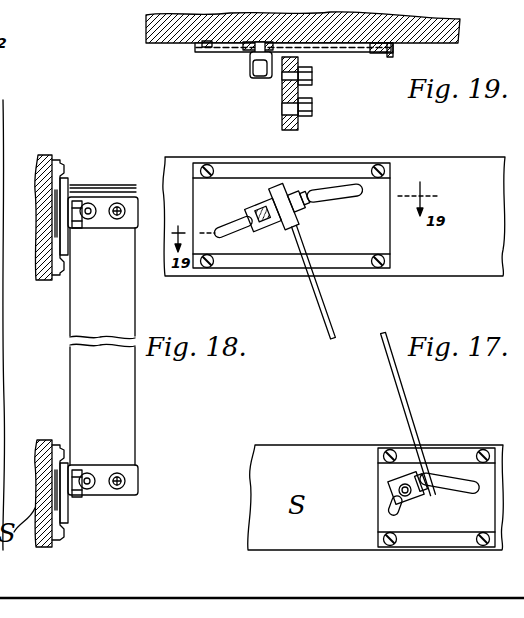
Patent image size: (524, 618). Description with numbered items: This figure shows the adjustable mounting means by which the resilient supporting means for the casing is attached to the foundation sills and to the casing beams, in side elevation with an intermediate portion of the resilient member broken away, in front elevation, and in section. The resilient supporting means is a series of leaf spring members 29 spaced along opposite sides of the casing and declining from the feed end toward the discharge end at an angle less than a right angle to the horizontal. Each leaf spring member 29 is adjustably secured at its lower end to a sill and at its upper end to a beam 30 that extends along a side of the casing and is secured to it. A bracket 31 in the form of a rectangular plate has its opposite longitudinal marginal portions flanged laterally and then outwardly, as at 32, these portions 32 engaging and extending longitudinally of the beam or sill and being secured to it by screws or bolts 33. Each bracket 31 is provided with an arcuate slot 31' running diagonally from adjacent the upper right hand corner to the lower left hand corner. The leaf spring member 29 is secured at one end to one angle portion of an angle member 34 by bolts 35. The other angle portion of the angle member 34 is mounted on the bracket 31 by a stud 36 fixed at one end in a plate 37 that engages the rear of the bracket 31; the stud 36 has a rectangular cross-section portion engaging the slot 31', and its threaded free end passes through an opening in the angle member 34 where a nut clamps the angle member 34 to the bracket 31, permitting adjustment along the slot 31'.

In FIG. 19, the leaf spring member 29 is at (296, 127).
In FIG. 17, the leaf spring member 29 is at (334, 340).
In FIG. 18, the leaf spring member 29 is at (74, 331).
In FIG. 19, the beam 30 is at (418, 22).
In FIG. 17, the beam 30 is at (460, 178).
In FIG. 18, the beam 30 is at (45, 154).
In FIG. 19, the bracket 31 is at (294, 63).
In FIG. 17, the bracket 31 is at (377, 339).
In FIG. 18, the bracket 31 is at (99, 341).
In FIG. 19, the arcuate slot 31' is at (226, 68).
In FIG. 17, the arcuate slot 31' is at (305, 360).
In FIG. 19, the flanged marginal portion 32 is at (290, 93).
In FIG. 17, the flanged marginal portion 32 is at (296, 172).
In FIG. 18, the flanged marginal portion 32 is at (58, 162).
In FIG. 17, the screws or bolts 33 is at (210, 165).
In FIG. 18, the screws or bolts 33 is at (58, 280).
In FIG. 19, the angle member 34 is at (247, 63).
In FIG. 17, the angle member 34 is at (263, 233).
In FIG. 18, the angle member 34 is at (100, 230).
In FIG. 19, the bolt 35 is at (312, 86).
In FIG. 17, the bolt 35 is at (315, 210).
In FIG. 18, the bolt 35 is at (117, 203).
In FIG. 19, the stud 36 is at (267, 80).
In FIG. 17, the stud 36 is at (269, 230).
In FIG. 18, the stud 36 is at (88, 229).
In FIG. 17, the plate 37 is at (270, 199).
In FIG. 18, the plate 37 is at (55, 212).